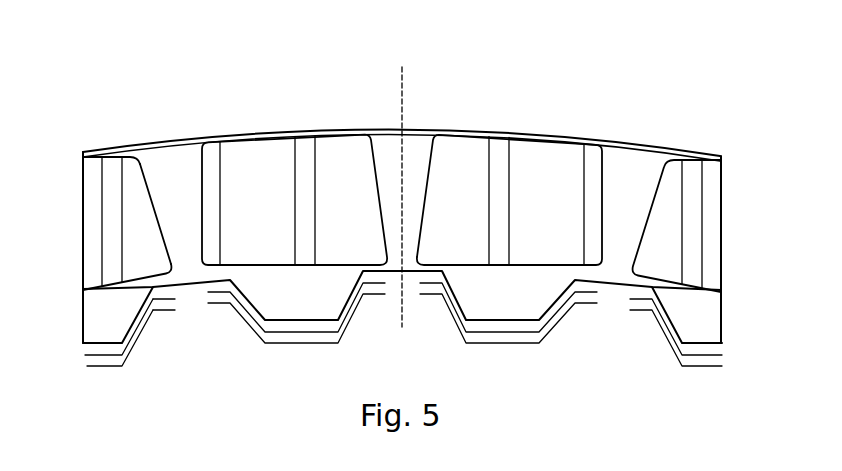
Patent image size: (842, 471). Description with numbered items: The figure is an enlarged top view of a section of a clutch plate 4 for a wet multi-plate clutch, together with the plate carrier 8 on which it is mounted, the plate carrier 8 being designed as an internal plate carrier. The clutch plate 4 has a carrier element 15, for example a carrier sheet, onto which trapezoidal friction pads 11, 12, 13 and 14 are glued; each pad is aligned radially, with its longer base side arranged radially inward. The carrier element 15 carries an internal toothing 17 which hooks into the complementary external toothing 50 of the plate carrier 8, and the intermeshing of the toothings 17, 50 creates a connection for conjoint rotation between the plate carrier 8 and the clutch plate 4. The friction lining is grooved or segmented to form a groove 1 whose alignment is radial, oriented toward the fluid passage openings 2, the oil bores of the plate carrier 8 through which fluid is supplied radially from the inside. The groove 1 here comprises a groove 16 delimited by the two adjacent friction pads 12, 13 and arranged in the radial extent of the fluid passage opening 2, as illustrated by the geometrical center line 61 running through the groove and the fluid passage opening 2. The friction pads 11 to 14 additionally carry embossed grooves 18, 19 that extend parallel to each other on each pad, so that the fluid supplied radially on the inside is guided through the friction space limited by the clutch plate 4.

The groove 1 is at (392, 138).
The fluid passage opening 2 is at (387, 314).
The clutch plate 4 is at (669, 132).
The plate carrier 8 is at (121, 372).
The friction pad 11 is at (93, 164).
The friction pad 12 is at (339, 150).
The friction pad 13 is at (556, 152).
The friction pad 14 is at (715, 196).
The carrier element 15 is at (188, 175).
The groove 16 is at (427, 167).
The toothing 17 is at (249, 313).
The embossed groove 18 is at (217, 170).
The embossed groove 19 is at (313, 167).
The toothing 50 is at (137, 313).
The geometrical center line 61 is at (408, 68).